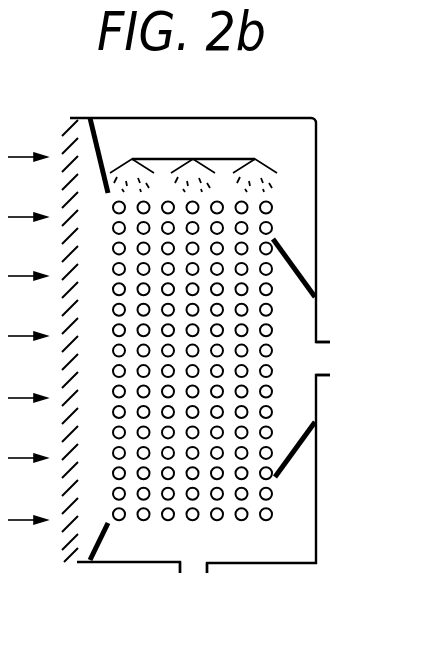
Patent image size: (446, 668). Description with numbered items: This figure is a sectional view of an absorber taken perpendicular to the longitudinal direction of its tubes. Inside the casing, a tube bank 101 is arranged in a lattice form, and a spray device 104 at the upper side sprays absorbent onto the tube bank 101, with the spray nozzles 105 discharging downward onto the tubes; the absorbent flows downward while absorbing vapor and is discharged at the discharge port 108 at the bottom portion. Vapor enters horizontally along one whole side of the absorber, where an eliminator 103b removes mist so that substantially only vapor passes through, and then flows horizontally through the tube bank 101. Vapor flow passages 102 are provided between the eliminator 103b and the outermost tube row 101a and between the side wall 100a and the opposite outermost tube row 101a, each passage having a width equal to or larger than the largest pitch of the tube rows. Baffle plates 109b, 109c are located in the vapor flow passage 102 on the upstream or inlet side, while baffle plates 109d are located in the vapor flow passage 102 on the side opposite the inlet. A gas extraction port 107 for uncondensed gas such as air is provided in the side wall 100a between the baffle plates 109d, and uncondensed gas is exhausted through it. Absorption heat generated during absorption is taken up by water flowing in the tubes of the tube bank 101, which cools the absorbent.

The side wall 100a is at (318, 262).
The tube bank 101 is at (282, 327).
The outermost tube row 101a is at (272, 516).
The vapor flow passage 102 is at (298, 208).
The eliminator 103b is at (62, 150).
The spray device 104 is at (173, 158).
The spray nozzle 105 is at (270, 183).
The gas extraction port 107 is at (313, 358).
The discharge port 108 is at (193, 563).
The baffle plate 109b is at (100, 147).
The baffle plate 109c is at (106, 545).
The baffle plate 109d is at (293, 458).